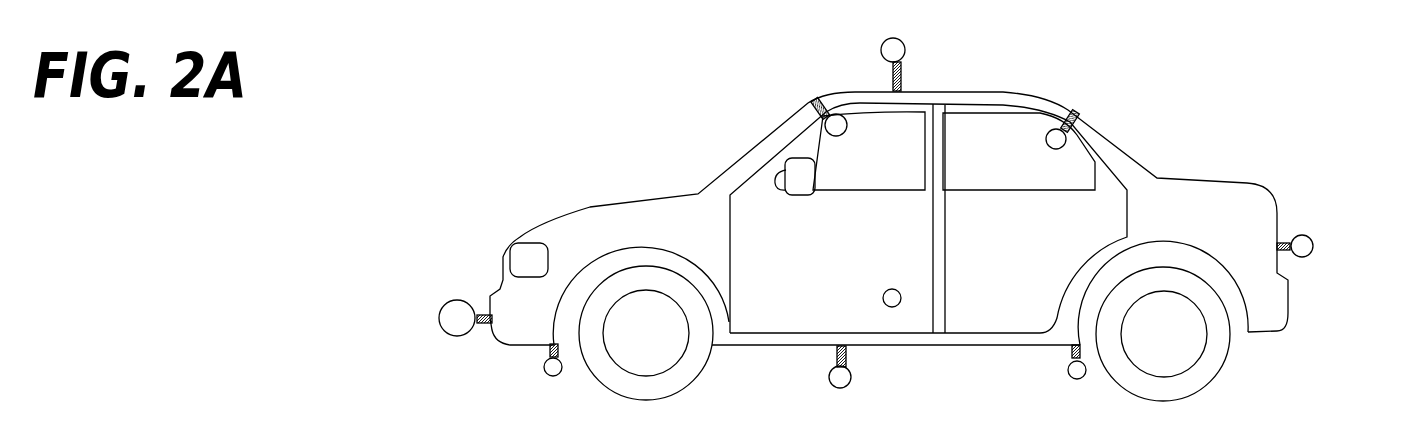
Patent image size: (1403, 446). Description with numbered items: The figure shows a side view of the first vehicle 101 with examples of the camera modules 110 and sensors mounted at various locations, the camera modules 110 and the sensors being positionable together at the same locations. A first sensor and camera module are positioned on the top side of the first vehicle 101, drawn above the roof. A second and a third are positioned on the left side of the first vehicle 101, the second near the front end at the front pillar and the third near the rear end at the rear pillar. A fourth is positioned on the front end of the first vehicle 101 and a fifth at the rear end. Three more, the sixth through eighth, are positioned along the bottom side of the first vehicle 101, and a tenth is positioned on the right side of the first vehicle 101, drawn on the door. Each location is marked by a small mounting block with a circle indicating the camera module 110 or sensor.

The first vehicle 101 is at (1217, 133).
The camera modules 110 is at (918, 219).